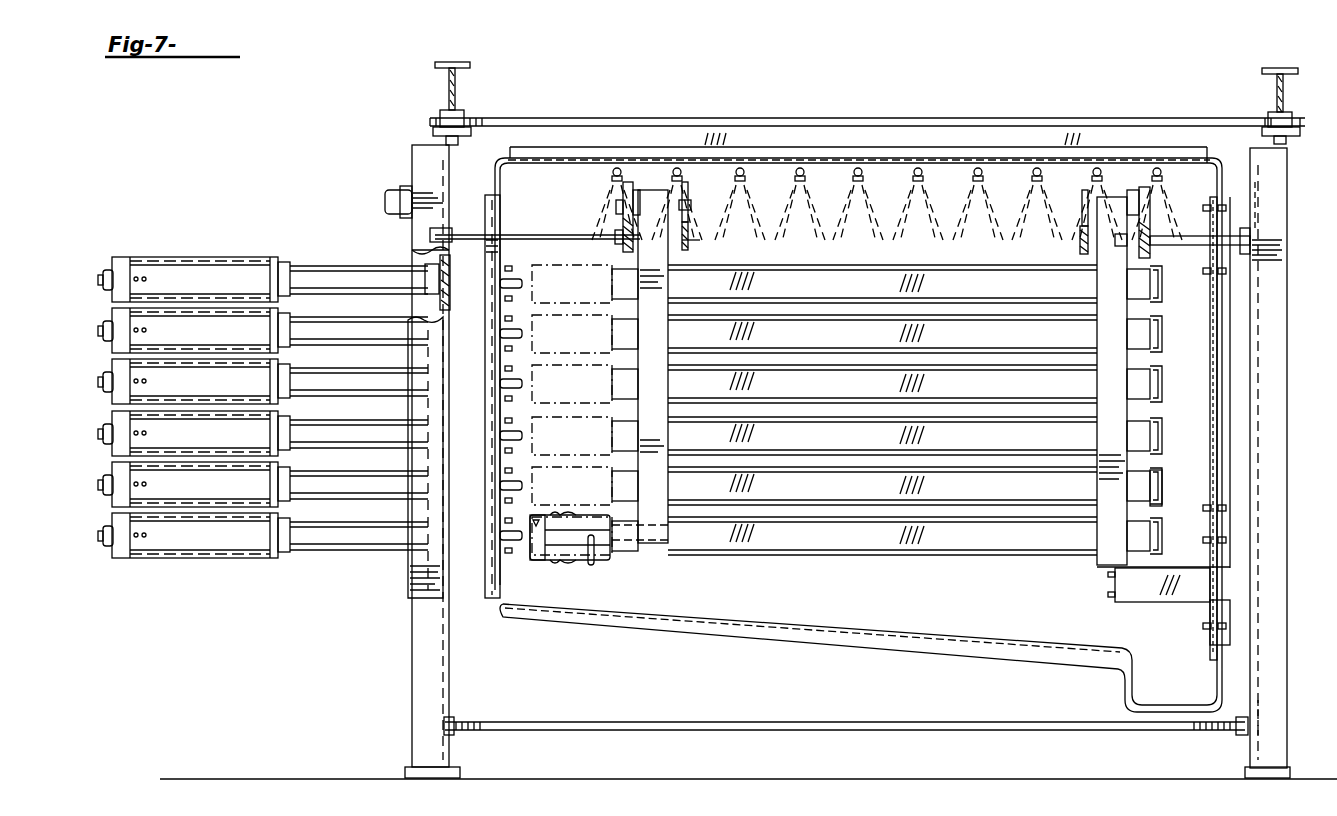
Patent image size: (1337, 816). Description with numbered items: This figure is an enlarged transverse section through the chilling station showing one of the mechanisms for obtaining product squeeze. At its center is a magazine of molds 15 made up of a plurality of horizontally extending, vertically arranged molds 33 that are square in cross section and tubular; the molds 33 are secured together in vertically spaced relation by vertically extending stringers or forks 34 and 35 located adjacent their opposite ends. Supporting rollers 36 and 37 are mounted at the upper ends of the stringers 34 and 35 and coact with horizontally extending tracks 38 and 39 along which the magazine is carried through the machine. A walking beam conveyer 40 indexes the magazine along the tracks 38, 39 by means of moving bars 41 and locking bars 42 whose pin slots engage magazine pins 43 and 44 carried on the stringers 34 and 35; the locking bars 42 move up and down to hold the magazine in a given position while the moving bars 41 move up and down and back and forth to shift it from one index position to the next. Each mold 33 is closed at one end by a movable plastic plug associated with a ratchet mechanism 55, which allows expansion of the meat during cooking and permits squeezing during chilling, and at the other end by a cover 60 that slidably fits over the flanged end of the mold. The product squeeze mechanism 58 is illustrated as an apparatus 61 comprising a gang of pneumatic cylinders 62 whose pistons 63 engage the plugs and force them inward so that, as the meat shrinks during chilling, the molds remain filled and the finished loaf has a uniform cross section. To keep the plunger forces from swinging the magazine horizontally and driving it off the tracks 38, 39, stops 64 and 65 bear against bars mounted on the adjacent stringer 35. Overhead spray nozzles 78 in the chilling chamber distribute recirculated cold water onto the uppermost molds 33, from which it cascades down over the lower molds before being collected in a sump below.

The magazine of molds 15 is at (1135, 264).
The molds 33 is at (956, 282).
The stringer 34 is at (668, 250).
The stringer 35 is at (1105, 260).
The supporting roller 36 is at (620, 202).
The supporting roller 37 is at (1150, 208).
The track 38 is at (628, 232).
The track 39 is at (1150, 230).
The walking beam conveyer 40 is at (690, 205).
The moving bars 41 is at (700, 240).
The locking bars 42 is at (686, 190).
The magazine pin 43 is at (692, 228).
The magazine pin 44 is at (1082, 215).
The ratchet mechanism 55 is at (590, 563).
The third product squeeze mechanism 58 is at (404, 183).
The cover 60 is at (1162, 530).
The squeeze apparatus 61 is at (358, 542).
The pneumatic cylinders 62 is at (384, 500).
The pistons 63 is at (478, 480).
The stop 64 is at (1128, 248).
The stop 65 is at (1115, 572).
The spray nozzles 78 is at (920, 177).